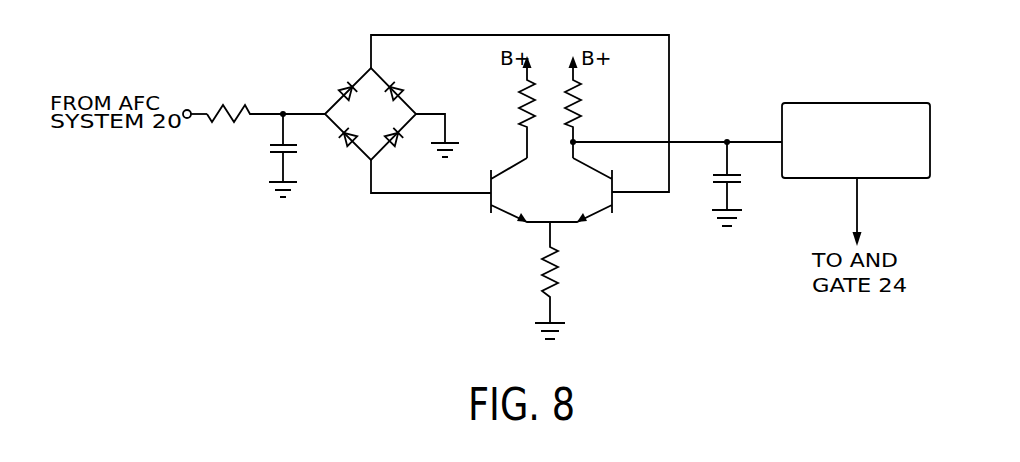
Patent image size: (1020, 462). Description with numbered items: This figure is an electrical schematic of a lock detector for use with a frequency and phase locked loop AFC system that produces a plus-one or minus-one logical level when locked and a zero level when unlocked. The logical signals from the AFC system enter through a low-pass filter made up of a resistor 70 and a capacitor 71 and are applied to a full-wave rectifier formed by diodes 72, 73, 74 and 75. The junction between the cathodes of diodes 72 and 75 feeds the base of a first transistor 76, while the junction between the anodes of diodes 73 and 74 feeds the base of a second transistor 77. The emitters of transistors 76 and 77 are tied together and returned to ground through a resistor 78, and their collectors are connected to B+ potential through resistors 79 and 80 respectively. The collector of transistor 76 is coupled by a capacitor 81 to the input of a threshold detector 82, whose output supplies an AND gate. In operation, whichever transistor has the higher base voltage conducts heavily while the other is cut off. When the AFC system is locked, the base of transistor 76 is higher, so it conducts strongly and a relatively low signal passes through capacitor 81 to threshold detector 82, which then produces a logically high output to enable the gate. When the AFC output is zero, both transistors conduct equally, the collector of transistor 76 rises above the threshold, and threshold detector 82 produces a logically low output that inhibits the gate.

The resistor 70 is at (224, 105).
The capacitor 71 is at (270, 149).
The diode 72 is at (341, 87).
The diode 73 is at (400, 144).
The diode 74 is at (344, 142).
The diode 75 is at (400, 88).
The first transistor 76 is at (615, 201).
The second transistor 77 is at (489, 210).
The resistor 78 is at (543, 283).
The resistor 79 is at (581, 99).
The resistor 80 is at (524, 94).
The capacitor 81 is at (737, 182).
The threshold detector 82 is at (842, 103).